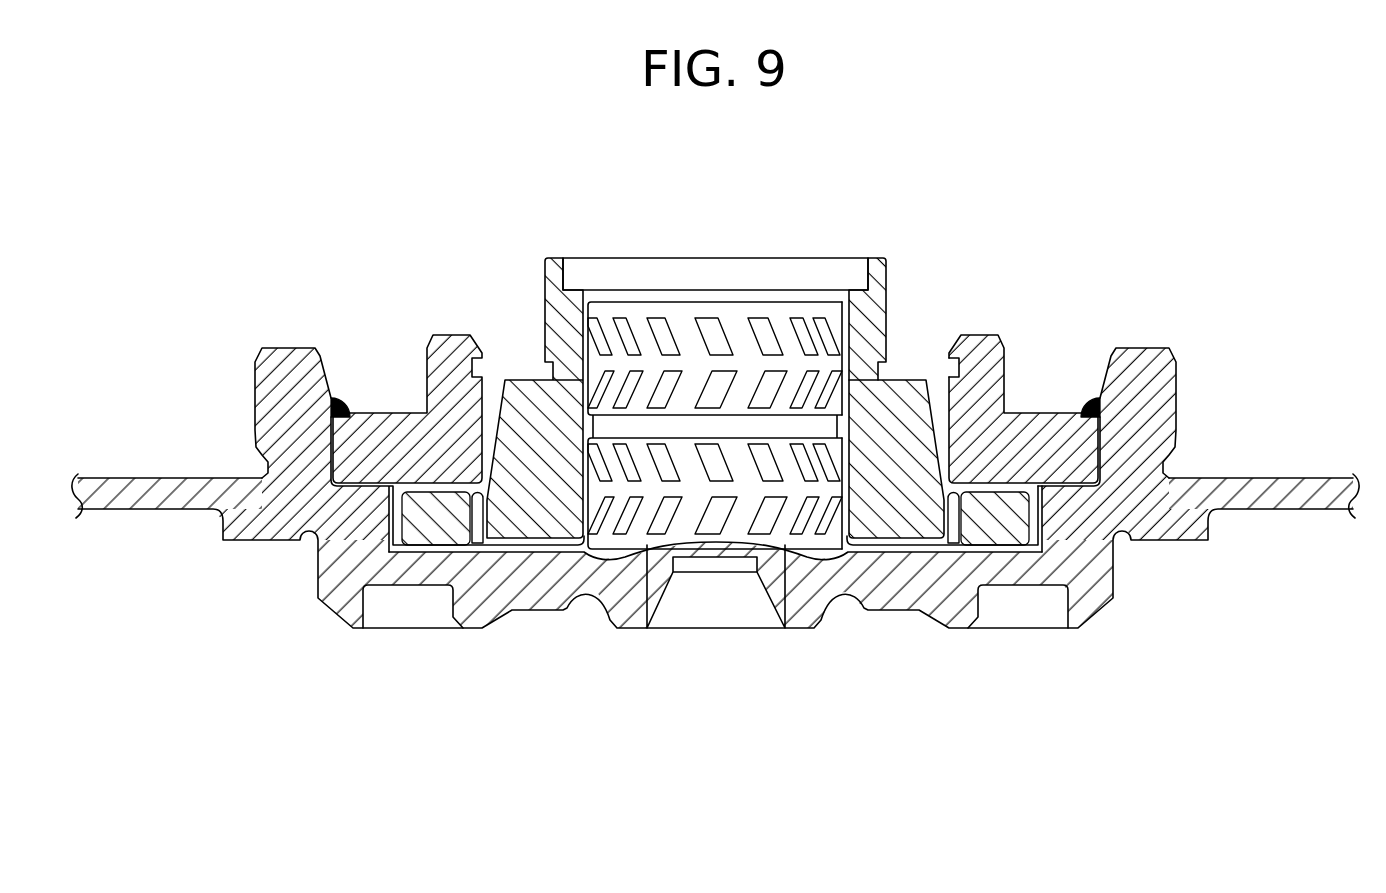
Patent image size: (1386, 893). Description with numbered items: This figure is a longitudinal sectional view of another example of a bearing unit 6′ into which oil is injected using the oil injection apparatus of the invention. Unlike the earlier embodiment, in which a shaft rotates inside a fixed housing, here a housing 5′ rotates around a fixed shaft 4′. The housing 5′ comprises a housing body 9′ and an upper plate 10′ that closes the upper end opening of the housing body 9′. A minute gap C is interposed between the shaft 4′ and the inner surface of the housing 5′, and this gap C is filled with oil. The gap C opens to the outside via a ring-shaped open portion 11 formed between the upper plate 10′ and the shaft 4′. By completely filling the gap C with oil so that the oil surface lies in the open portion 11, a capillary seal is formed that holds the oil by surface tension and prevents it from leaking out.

The gap C is at (846, 403).
The shaft 4′ is at (903, 393).
The housing 5′ is at (1177, 253).
The bearing unit 6′ is at (1128, 197).
The housing body 9′ is at (1148, 357).
The upper plate 10′ is at (1005, 358).
The open portion 11 is at (935, 366).